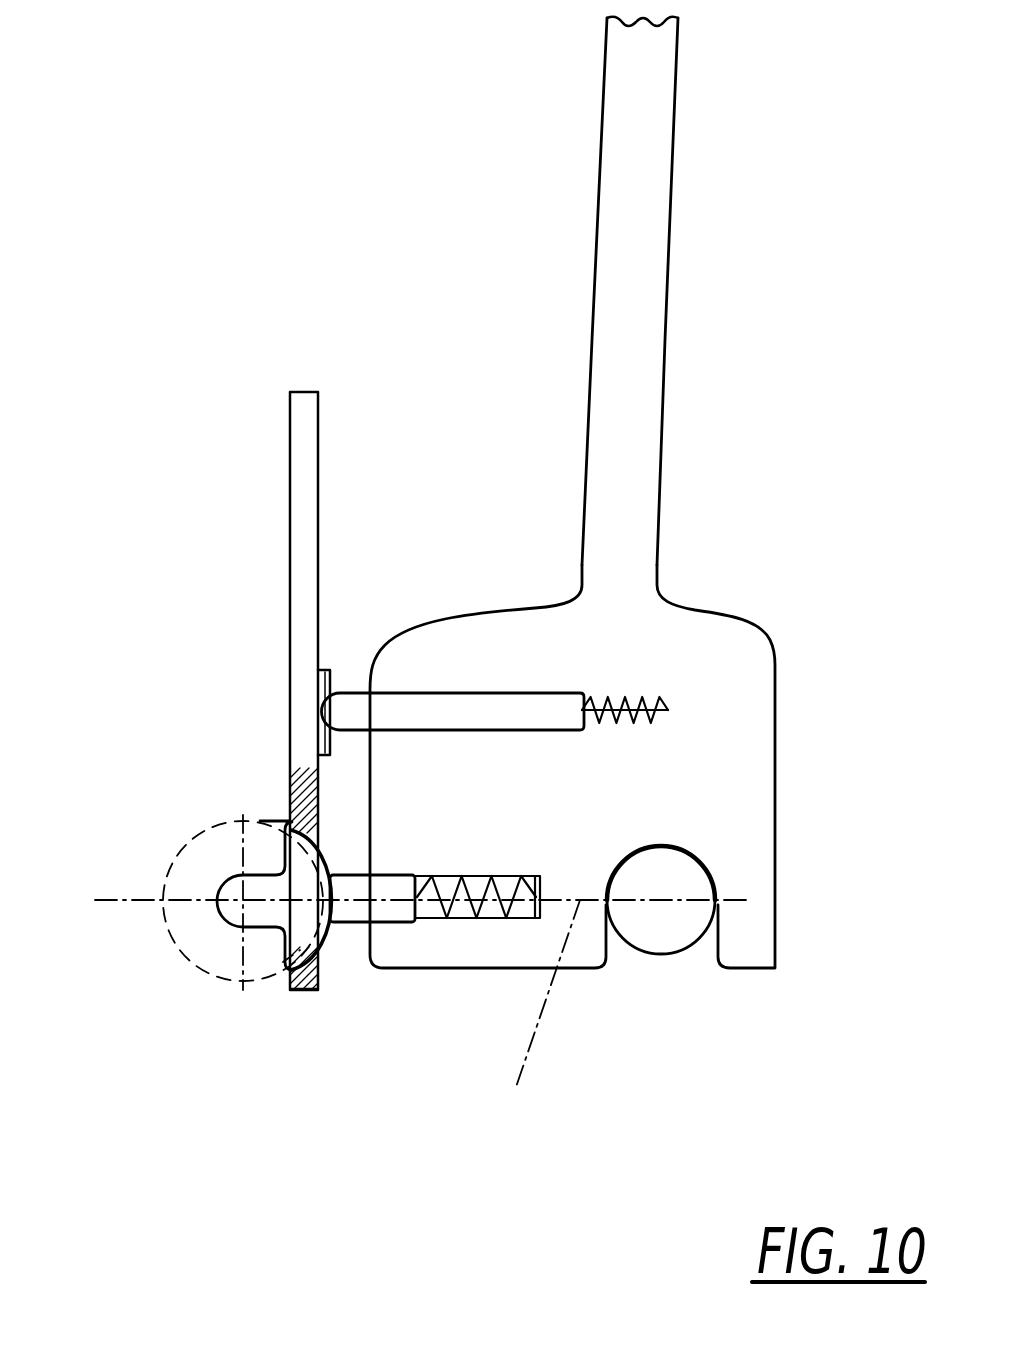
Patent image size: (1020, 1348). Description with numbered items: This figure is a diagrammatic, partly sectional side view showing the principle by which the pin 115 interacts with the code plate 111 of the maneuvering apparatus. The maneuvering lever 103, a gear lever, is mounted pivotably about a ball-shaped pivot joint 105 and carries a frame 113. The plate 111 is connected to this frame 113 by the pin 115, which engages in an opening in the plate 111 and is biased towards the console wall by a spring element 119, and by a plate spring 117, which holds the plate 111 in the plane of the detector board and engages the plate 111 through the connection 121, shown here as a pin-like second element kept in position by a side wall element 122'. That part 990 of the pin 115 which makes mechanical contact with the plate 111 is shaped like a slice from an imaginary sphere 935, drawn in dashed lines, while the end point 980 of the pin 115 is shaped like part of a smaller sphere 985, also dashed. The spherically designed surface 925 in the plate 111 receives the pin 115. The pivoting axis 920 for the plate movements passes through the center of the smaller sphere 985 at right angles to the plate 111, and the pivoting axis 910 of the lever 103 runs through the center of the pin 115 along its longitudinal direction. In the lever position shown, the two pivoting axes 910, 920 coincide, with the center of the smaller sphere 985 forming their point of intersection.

The maneuvering lever 103 is at (648, 390).
The pivot joint 105 is at (684, 951).
The plate 111 is at (297, 412).
The frame 113 is at (477, 630).
The pin 115 is at (360, 915).
The plate spring 117 is at (652, 697).
The spring element 119 is at (482, 922).
The connection 121 is at (347, 700).
The side wall element 122' is at (256, 706).
The pivoting axis of the lever 910 is at (534, 1015).
The pivoting axis for the movements of the plate 920 is at (157, 900).
The surface in the plate 925 is at (307, 992).
The imaginary sphere 935 is at (237, 820).
The end point of the pin 980 is at (223, 885).
The smaller sphere 985 is at (283, 962).
The part of the pin 990 is at (296, 953).